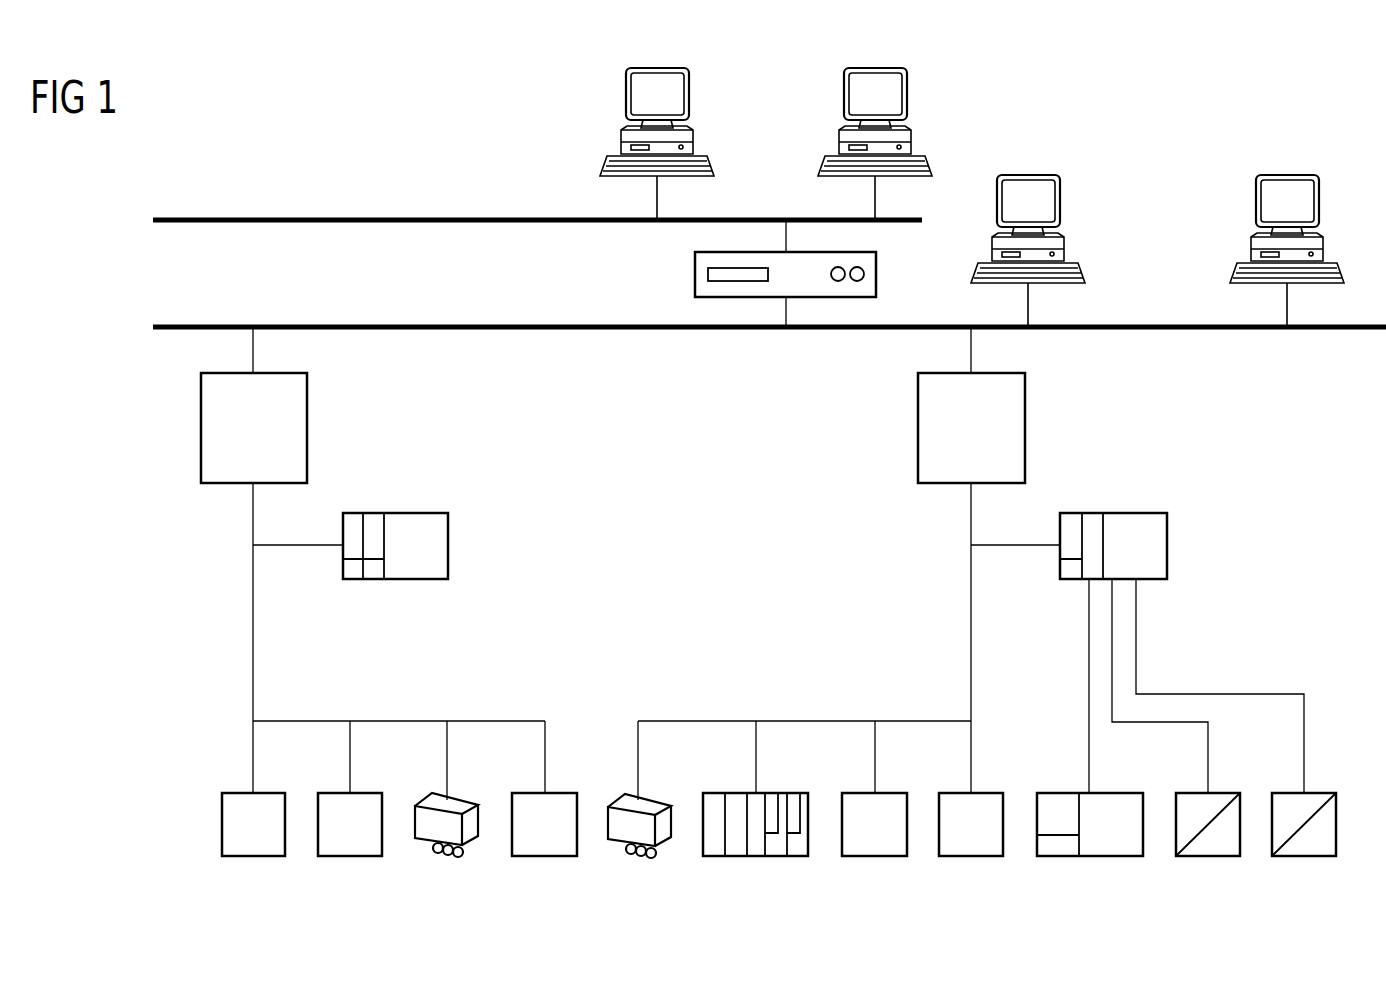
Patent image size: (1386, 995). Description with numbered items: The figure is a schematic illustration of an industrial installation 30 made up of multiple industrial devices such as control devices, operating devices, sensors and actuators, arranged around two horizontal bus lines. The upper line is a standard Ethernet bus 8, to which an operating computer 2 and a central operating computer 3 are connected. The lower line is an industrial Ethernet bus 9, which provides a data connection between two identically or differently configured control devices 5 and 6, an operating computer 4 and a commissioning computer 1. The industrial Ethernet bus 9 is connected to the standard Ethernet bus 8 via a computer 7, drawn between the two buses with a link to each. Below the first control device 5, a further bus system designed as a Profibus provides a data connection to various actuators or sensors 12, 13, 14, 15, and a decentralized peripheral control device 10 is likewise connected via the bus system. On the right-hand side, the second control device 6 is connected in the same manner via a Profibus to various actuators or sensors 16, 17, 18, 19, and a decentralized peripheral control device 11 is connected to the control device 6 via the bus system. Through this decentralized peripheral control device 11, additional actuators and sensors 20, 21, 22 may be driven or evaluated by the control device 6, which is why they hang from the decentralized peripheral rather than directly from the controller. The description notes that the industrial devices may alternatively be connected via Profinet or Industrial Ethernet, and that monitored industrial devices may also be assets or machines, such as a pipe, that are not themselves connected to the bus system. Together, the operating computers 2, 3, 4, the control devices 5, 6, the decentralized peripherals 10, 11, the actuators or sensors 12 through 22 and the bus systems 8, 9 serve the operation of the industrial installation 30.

The commissioning computer 1 is at (1318, 198).
The operating computer 2 is at (690, 93).
The central operating computer 3 is at (907, 93).
The operating computer 4 is at (1062, 198).
The control device 5 is at (307, 418).
The control device 6 is at (1025, 418).
The computer 7 is at (695, 270).
The standard Ethernet bus 8 is at (355, 217).
The industrial Ethernet bus 9 is at (378, 325).
The decentralized peripheral control device 10 is at (448, 541).
The decentralized peripheral control device 11 is at (1167, 545).
The actuator or sensor 12 is at (253, 858).
The actuator or sensor 13 is at (352, 858).
The actuator or sensor 14 is at (446, 858).
The actuator or sensor 15 is at (545, 858).
The actuator or sensor 16 is at (640, 858).
The actuator or sensor 17 is at (758, 858).
The actuator or sensor 18 is at (877, 858).
The actuator or sensor 19 is at (973, 858).
The actuator or sensor 20 is at (1092, 858).
The actuator or sensor 21 is at (1208, 858).
The actuator or sensor 22 is at (1308, 858).
The industrial installation 30 is at (1294, 114).